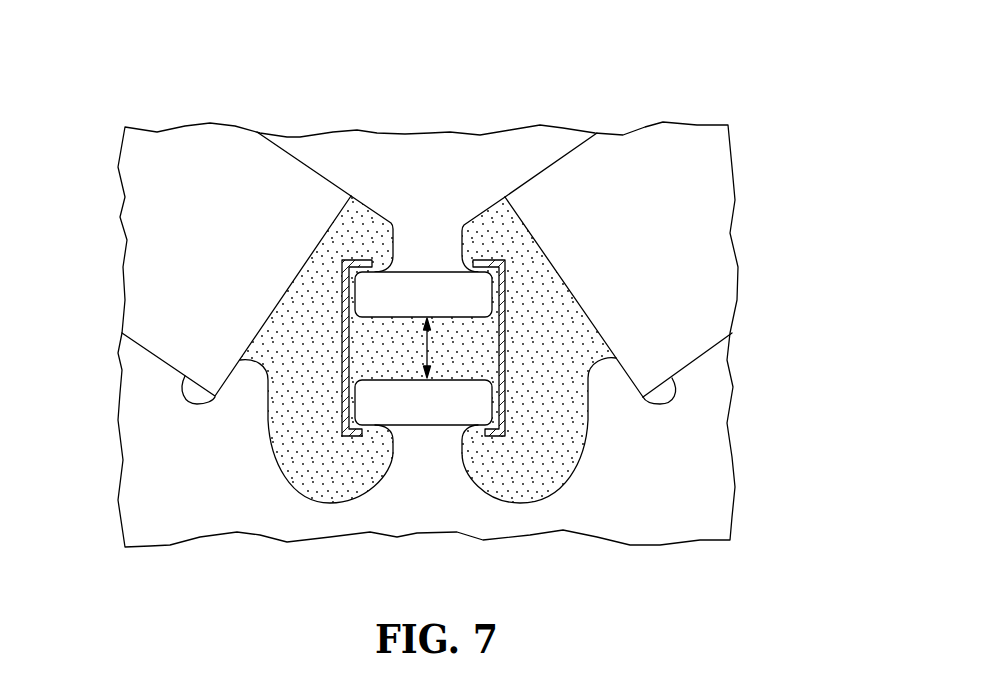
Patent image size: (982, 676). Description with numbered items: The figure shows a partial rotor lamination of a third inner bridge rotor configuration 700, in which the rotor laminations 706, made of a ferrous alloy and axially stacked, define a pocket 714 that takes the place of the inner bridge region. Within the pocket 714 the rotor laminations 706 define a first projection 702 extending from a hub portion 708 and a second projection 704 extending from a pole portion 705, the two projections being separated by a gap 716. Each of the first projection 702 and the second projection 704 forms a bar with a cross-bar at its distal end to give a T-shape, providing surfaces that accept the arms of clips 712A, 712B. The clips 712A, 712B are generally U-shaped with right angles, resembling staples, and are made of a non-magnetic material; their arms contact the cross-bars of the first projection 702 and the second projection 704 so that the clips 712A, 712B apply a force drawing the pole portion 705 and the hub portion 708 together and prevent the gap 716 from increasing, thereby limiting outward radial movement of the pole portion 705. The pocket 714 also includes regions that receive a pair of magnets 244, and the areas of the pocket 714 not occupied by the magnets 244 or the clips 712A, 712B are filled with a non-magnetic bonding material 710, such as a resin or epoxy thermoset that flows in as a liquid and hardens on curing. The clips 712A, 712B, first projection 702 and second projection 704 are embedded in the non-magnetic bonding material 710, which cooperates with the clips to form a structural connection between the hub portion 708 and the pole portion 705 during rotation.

The third inner bridge rotor configuration 700 is at (750, 92).
The magnets 244 is at (180, 237).
The first projection 702 is at (440, 400).
The second projection 704 is at (430, 300).
The pole portion 705 is at (512, 148).
The rotor laminations 706 is at (713, 502).
The hub portion 708 is at (415, 516).
The non-magnetic bonding material 710 is at (528, 450).
The clip 712A is at (342, 345).
The clip 712B is at (505, 322).
The pocket 714 is at (328, 504).
The gap 716 is at (427, 350).